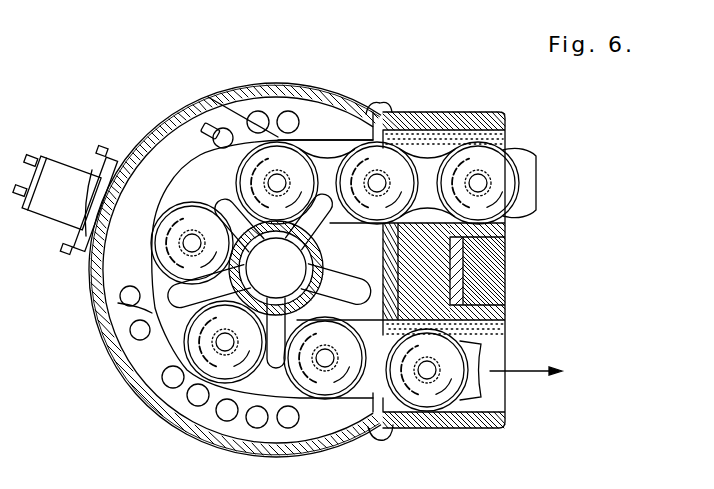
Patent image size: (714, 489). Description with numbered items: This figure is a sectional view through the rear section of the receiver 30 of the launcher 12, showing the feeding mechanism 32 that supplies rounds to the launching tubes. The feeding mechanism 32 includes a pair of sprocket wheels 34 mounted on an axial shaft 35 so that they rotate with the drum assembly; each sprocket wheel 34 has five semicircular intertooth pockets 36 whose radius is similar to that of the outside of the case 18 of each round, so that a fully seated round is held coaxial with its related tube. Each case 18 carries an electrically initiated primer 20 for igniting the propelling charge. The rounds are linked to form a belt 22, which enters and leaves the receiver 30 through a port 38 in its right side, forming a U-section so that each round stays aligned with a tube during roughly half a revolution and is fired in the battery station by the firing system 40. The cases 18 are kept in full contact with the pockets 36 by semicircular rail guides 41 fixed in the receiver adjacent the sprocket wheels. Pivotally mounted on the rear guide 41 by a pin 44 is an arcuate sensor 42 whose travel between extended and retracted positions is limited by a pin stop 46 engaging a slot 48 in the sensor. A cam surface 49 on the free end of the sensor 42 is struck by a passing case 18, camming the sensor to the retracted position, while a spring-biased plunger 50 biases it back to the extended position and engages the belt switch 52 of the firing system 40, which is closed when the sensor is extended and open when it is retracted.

The launcher 12 is at (363, 98).
The cylindrical cuplike case 18 is at (507, 210).
The electrically initiated primer 20 is at (476, 181).
The belt 22 is at (520, 144).
The receiver 30 is at (250, 88).
The feeding mechanism 32 is at (362, 253).
The sprocket wheels 34 is at (332, 284).
The axial shaft 35 is at (302, 286).
The semicircular intertooth pockets 36 is at (246, 249).
The port 38 is at (470, 135).
The firing system 40 is at (77, 155).
The semicircular rail guides 41 is at (308, 128).
The sensor 42 is at (165, 150).
The pin 44 is at (120, 297).
The pin stop 46 is at (222, 142).
The slot 48 is at (206, 126).
The cam surface 49 is at (298, 123).
The spring-biased plunger 50 is at (112, 226).
The belt switch 52 is at (68, 199).